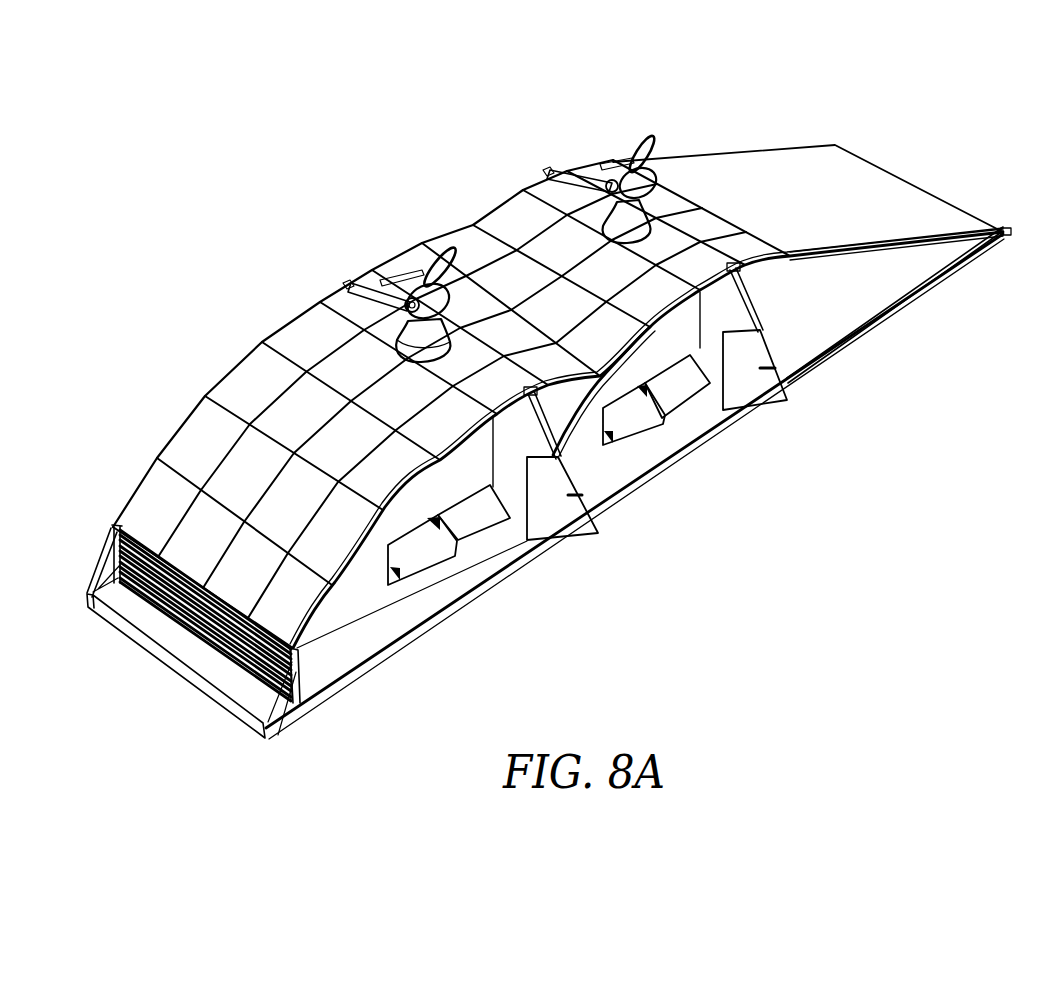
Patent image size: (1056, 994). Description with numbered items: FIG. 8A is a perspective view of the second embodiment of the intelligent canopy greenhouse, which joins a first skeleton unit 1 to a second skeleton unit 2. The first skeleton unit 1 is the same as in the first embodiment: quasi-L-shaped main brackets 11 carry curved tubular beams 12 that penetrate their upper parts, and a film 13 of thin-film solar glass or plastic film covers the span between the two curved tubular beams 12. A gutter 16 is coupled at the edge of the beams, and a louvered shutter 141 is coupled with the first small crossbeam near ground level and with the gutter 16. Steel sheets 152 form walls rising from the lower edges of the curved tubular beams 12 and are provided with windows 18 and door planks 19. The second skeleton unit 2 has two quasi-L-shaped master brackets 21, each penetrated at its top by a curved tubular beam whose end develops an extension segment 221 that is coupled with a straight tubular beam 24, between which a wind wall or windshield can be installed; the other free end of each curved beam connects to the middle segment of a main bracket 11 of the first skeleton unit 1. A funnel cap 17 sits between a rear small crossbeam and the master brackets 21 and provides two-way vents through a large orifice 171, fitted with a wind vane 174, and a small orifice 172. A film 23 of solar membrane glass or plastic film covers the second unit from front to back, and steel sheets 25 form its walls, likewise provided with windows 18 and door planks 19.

The first skeleton unit 1 is at (214, 324).
The second skeleton unit 2 is at (697, 130).
The main bracket 11 is at (586, 478).
The curved tubular beam 12 is at (262, 698).
The film 13 is at (218, 378).
The gutter 16 is at (123, 522).
The funnel cap 17 is at (402, 343).
The window 18 is at (428, 562).
The door plank 19 is at (599, 536).
The master bracket 21 is at (745, 327).
The film 23 is at (546, 173).
The straight tubular beam 24 is at (1001, 230).
The steel sheet 25 is at (684, 338).
The louvered shutter 141 is at (157, 607).
The steel sheet 152 is at (365, 668).
The large orifice 171 is at (443, 283).
The small orifice 172 is at (350, 284).
The wind vane 174 is at (437, 270).
The extension segment 221 is at (792, 262).